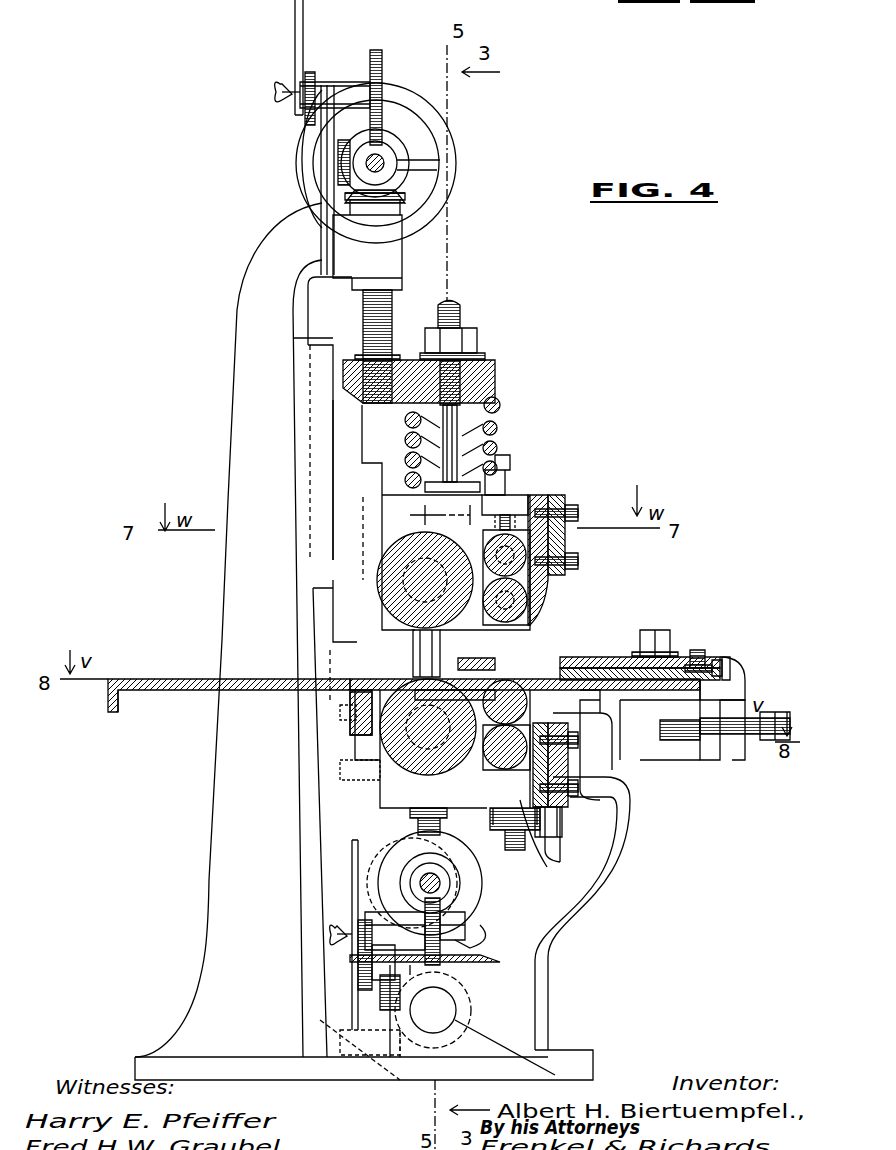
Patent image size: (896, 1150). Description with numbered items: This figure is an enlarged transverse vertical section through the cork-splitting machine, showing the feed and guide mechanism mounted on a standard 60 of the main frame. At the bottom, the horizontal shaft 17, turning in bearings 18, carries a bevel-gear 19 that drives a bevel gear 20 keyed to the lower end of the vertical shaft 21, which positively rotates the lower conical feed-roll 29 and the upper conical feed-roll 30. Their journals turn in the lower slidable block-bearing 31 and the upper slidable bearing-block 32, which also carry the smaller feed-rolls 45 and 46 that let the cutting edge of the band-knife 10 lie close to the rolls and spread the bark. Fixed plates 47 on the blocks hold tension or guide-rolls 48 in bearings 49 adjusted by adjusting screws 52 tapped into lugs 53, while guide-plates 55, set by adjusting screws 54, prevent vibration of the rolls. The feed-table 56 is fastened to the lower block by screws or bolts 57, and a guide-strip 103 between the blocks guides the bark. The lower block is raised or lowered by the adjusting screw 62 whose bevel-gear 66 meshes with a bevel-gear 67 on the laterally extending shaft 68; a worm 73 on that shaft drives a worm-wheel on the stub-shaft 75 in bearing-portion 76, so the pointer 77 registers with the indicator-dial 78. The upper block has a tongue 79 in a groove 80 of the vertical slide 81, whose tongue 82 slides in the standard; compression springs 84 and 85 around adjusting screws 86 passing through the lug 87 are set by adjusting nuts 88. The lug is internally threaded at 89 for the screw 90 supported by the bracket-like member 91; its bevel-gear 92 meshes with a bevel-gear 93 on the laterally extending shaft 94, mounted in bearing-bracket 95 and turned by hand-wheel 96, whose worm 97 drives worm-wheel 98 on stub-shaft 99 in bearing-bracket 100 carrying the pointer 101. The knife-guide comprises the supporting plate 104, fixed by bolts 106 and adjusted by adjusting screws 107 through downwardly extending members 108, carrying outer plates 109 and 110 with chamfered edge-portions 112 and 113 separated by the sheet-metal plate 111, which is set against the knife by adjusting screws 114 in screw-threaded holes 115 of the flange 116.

The band-knife 10 is at (585, 672).
The horizontal shaft 17 is at (560, 1072).
The bearings 18 is at (410, 1065).
The bevel-gear 19 is at (445, 1010).
The bevel gear 20 is at (470, 958).
The vertical shaft 21 is at (420, 645).
The lower conical feed-roll 29 is at (390, 740).
The upper conical feed-roll 30 is at (385, 592).
The lower slidable block-bearing 31 is at (380, 800).
The upper slidable bearing-block 32 is at (385, 520).
The smaller feed-roll 45 is at (505, 690).
The smaller feed-roll 46 is at (530, 612).
The fixed plate 47 is at (520, 512).
The tension or guide-roll 48 is at (527, 580).
The bearing 49 is at (512, 556).
The adjusting screw 52 is at (512, 482).
The lug 53 is at (552, 500).
The adjusting screw 54 is at (578, 513).
The guide-plate 55 is at (545, 502).
The feed-table 56 is at (150, 700).
The screw or bolt 57 is at (343, 713).
The standard 60 is at (248, 290).
The adjusting screw 62 is at (420, 824).
The bevel-gear 66 is at (505, 928).
The bevel-gear 67 is at (475, 888).
The laterally extending shaft 68 is at (440, 895).
The worm 73 is at (480, 970).
The stub-shaft 75 is at (335, 934).
The bearing-portion 76 is at (385, 1000).
The pointer 77 is at (350, 860).
The indicator-dial 78 is at (360, 1000).
The tongue 79 is at (418, 493).
The groove 80 is at (320, 628).
The vertical slide 81 is at (357, 437).
The tongue 82 is at (312, 348).
The compression spring 84 is at (500, 405).
The compression spring 85 is at (497, 440).
The adjusting screw 86 is at (468, 305).
The lug or projection 87 is at (495, 375).
The adjusting nut 88 is at (485, 335).
The internally screw-threaded portion 89 is at (345, 375).
The screw 90 is at (375, 315).
The bracket-like member 91 is at (400, 255).
The bevel-gear 92 is at (410, 185).
The bevel-gear 93 is at (405, 150).
The laterally extending shaft 94 is at (368, 168).
The bearing-bracket 95 is at (340, 178).
The hand-wheel 96 is at (410, 100).
The worm 97 is at (395, 160).
The worm-wheel 98 is at (380, 55).
The stub-shaft 99 is at (282, 98).
The bearing-bracket 100 is at (340, 90).
The pointer 101 is at (297, 24).
The guide-strip 103 is at (476, 668).
The supporting plate 104 is at (740, 690).
The bolt 106 is at (652, 645).
The adjusting screw 107 is at (770, 742).
The downwardly extending member 108 is at (735, 720).
The outer plate 109 is at (614, 657).
The outer plate 110 is at (700, 652).
The sheet-metal plate 111 is at (600, 660).
The chamfered edge-portion 112 is at (512, 680).
The chamfered edge-portion 113 is at (453, 691).
The adjusting screw 114 is at (735, 655).
The screw-threaded hole 115 is at (728, 650).
The flange 116 is at (708, 658).